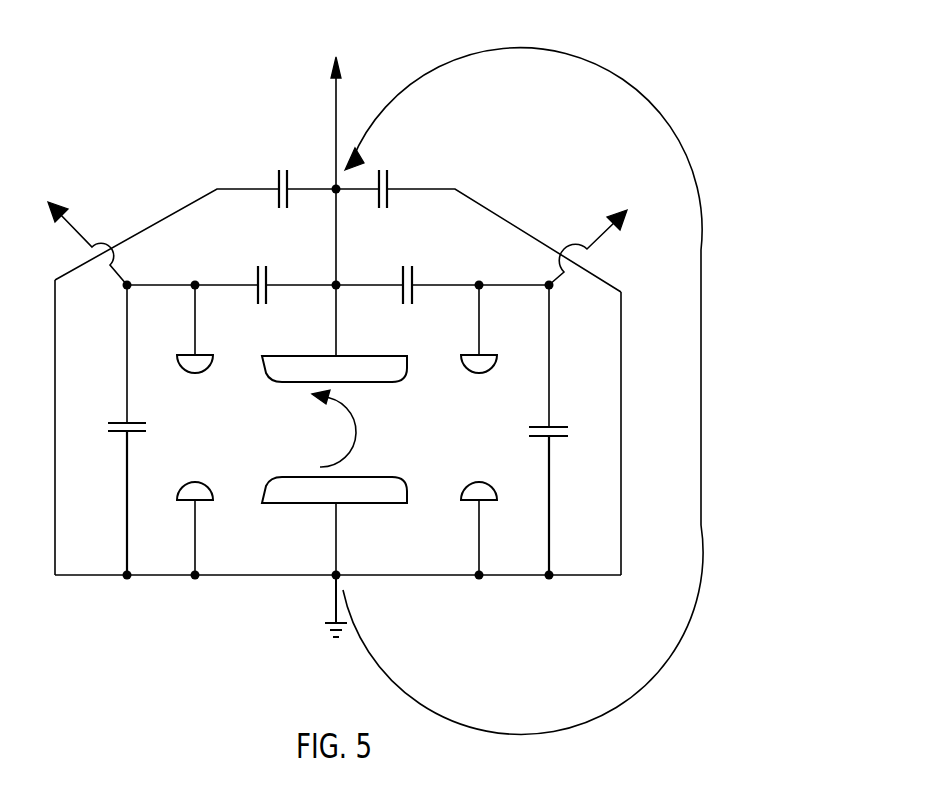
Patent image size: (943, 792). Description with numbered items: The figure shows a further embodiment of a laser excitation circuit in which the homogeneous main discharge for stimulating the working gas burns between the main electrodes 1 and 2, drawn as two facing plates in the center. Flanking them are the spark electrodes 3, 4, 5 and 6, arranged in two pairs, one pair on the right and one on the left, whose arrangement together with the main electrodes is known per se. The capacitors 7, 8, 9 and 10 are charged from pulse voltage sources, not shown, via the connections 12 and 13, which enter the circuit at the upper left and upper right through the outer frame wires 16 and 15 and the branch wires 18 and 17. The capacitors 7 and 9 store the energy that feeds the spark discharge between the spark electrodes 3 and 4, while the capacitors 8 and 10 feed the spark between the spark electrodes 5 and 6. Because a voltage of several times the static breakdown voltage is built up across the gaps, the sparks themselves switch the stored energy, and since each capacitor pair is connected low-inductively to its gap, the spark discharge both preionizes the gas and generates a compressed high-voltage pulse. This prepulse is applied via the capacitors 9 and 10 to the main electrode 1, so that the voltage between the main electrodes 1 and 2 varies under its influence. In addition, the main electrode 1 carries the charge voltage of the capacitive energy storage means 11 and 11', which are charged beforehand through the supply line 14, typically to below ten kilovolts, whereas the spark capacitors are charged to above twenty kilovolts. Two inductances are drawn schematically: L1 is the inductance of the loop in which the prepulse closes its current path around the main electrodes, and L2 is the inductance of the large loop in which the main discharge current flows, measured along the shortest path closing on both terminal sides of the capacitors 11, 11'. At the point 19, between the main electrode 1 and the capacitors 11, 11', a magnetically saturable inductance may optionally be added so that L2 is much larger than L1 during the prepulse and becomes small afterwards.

The main electrode 1 is at (334, 333).
The main electrode 2 is at (334, 526).
The spark electrode 3 is at (479, 329).
The spark electrode 4 is at (479, 528).
The spark electrode 5 is at (195, 329).
The spark electrode 6 is at (195, 528).
The capacitor 7 is at (549, 488).
The capacitor 8 is at (127, 484).
The capacitor 9 is at (416, 280).
The capacitor 10 is at (277, 280).
The capacitive energy storage means 11 is at (298, 185).
The capacitive energy storage means 11' is at (401, 184).
The connection 12 is at (76, 232).
The connection 13 is at (600, 235).
The supply line 14 is at (335, 108).
The conductor 15 is at (634, 433).
The conductor 16 is at (38, 427).
The conductor 17 is at (564, 356).
The conductor 18 is at (110, 354).
The point 19 is at (349, 237).
The inductance L1 is at (334, 428).
The inductance L2 is at (523, 391).